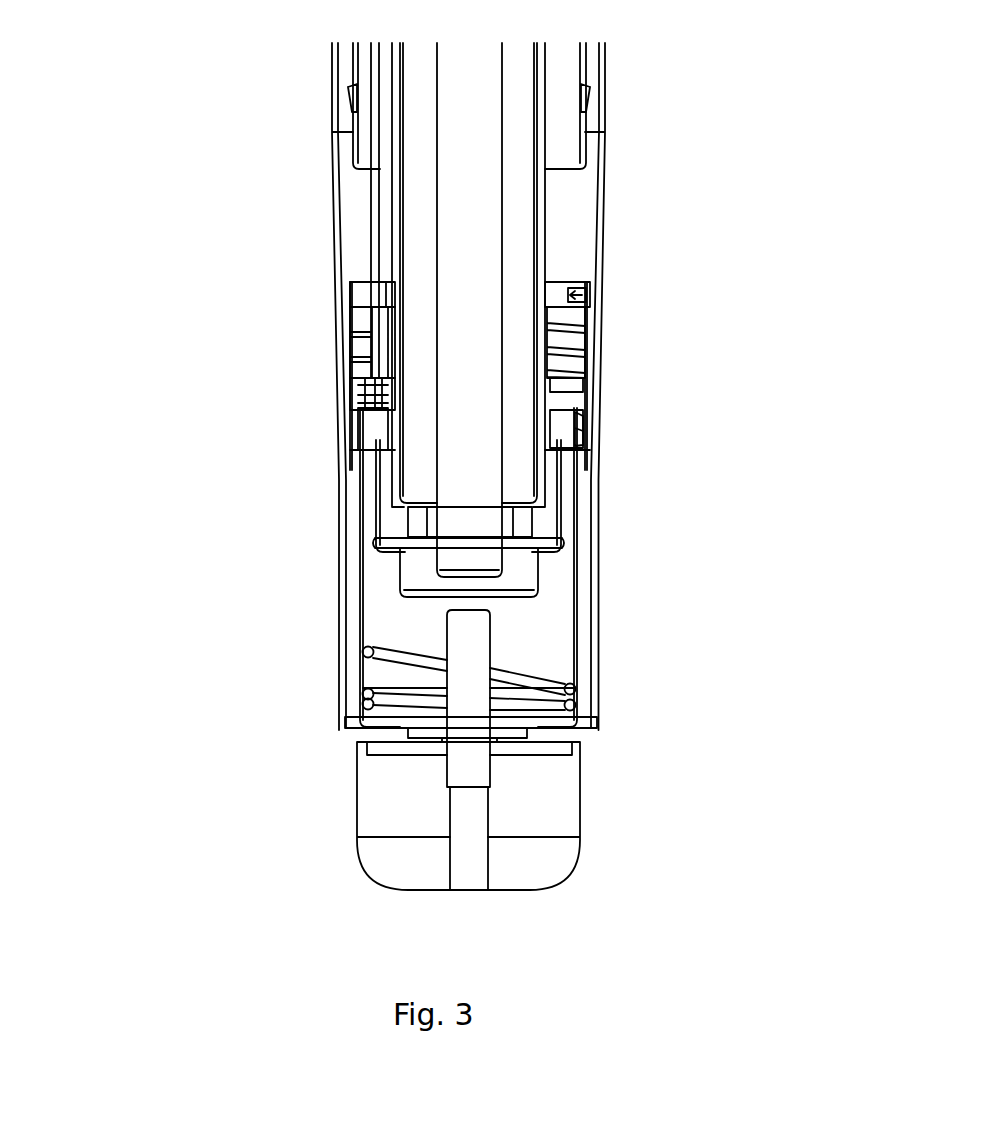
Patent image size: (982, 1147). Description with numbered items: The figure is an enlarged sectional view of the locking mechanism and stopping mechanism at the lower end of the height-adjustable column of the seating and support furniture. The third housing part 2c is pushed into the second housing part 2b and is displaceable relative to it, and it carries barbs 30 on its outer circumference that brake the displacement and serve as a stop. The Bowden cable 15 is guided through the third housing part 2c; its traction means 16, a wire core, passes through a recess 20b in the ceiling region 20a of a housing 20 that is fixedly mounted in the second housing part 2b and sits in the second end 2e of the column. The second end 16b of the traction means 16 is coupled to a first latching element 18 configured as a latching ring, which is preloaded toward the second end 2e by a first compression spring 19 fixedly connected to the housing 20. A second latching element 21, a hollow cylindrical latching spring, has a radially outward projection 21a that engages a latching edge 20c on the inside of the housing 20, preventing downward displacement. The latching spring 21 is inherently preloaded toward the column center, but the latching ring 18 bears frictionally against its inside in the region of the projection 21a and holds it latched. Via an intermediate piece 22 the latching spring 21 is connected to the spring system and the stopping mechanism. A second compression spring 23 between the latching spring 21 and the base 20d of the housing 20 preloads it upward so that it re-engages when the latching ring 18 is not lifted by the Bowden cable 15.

The second housing part 2b is at (600, 200).
The third housing part 2c is at (585, 147).
The second end of the height-adjustable column 2e is at (617, 602).
The Bowden cable 15 is at (357, 55).
The traction means 16 is at (370, 205).
The second end of the traction means 16b is at (372, 388).
The first latching element 18 is at (600, 420).
The first compression spring 19 is at (585, 332).
The housing 20 is at (350, 512).
The ceiling region of the housing 20a is at (362, 292).
The recess 20b is at (362, 312).
The latching edge 20c is at (362, 442).
The base of the housing 20d is at (348, 731).
The second latching element 21 is at (572, 503).
The radially outward projection 21a is at (600, 435).
The intermediate piece 22 is at (525, 605).
The second compression spring 23 is at (375, 660).
The barbs 30 is at (352, 100).